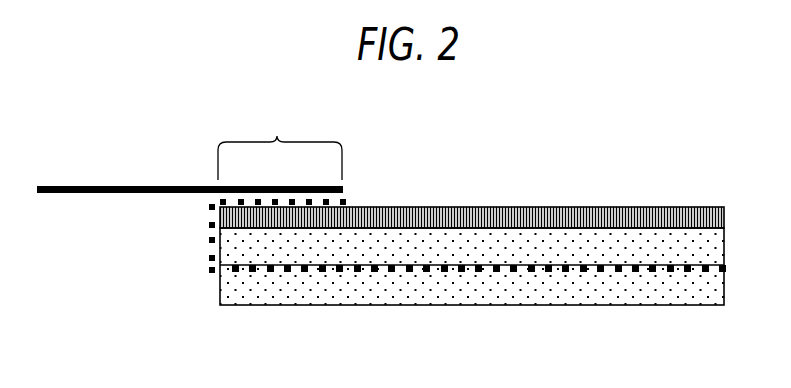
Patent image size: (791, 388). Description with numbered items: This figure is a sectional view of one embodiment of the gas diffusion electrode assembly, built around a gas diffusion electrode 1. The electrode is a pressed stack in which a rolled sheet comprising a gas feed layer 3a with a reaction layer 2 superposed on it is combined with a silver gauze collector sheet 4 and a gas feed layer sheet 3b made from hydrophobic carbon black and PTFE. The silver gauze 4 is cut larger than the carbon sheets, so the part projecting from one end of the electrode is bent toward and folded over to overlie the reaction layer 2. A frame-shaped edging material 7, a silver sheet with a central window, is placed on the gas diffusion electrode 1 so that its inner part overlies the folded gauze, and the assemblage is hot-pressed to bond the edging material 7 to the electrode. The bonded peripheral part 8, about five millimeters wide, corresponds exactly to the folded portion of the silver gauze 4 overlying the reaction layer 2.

The gas diffusion electrode 1 is at (510, 168).
The reaction layer 2 is at (558, 206).
The gas feed layer 3a is at (725, 247).
The gas feed layer sheet 3b is at (551, 297).
The silver gauze collector sheet 4 is at (208, 242).
The edging material 7 is at (100, 186).
The peripheral part 8 is at (280, 143).